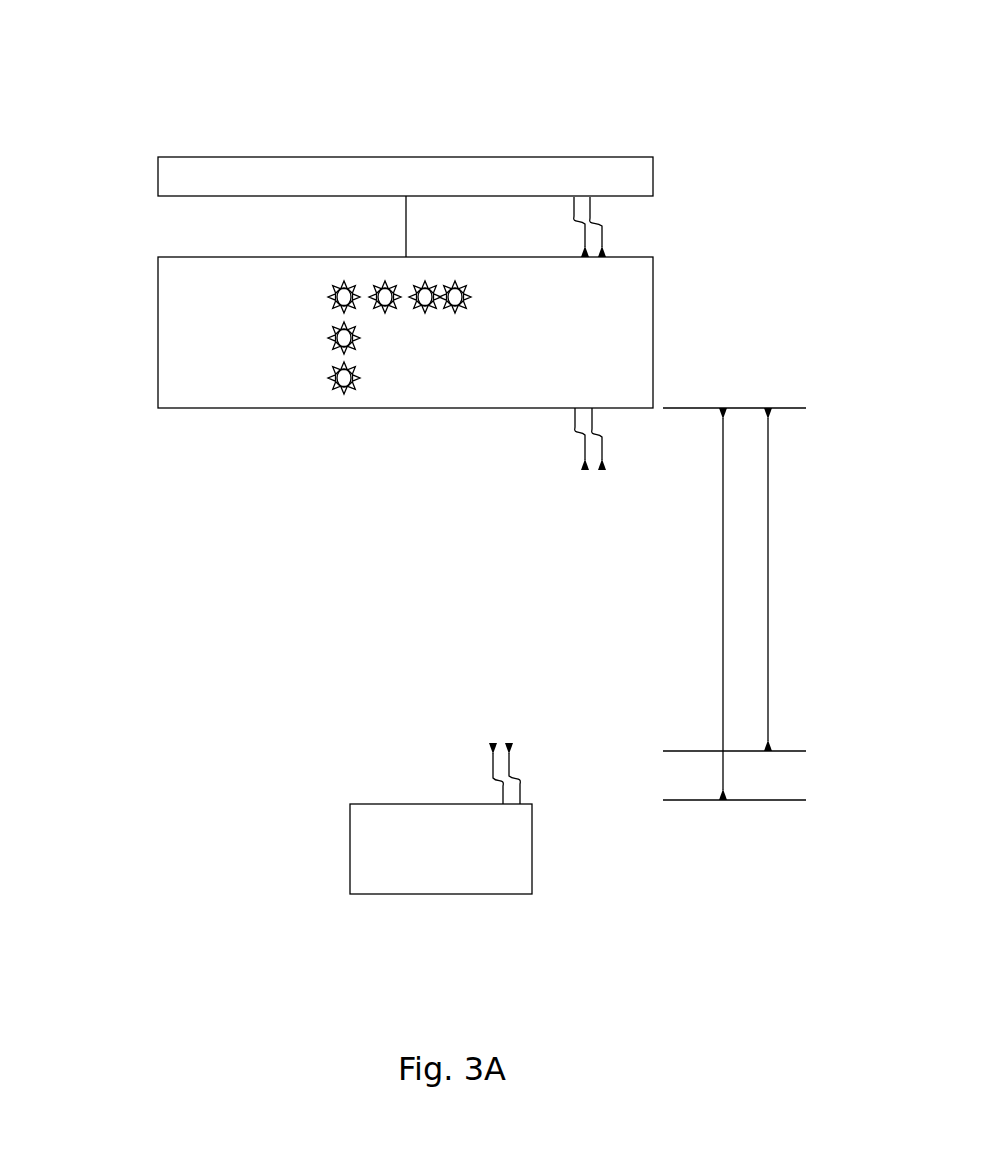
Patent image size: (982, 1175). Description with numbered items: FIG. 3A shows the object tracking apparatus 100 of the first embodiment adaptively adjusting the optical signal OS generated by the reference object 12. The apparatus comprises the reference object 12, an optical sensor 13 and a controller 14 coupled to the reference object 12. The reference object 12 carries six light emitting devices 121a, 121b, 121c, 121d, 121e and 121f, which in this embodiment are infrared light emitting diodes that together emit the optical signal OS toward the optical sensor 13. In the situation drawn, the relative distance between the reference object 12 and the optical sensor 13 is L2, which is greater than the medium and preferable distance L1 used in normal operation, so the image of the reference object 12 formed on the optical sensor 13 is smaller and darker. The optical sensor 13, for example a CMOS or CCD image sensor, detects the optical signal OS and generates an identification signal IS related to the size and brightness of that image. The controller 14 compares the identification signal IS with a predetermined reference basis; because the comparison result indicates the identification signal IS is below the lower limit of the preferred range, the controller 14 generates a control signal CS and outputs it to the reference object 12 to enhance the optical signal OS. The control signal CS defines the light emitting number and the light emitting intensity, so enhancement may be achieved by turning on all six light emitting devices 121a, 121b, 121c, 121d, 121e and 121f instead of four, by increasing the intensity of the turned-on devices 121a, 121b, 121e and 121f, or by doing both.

The object tracking apparatus 100 is at (802, 82).
The controller 14 is at (653, 165).
The reference object 12 is at (653, 332).
The optical sensor 13 is at (532, 845).
The light emitting device 121a is at (328, 370).
The light emitting device 121b is at (330, 331).
The light emitting device 121c is at (332, 294).
The light emitting device 121d is at (385, 313).
The light emitting device 121e is at (425, 313).
The light emitting device 121f is at (455, 313).
The control signal CS is at (607, 227).
The optical signal OS is at (608, 439).
The identification signal IS is at (520, 772).
The relative distance L1 is at (741, 579).
The relative distance L2 is at (734, 604).